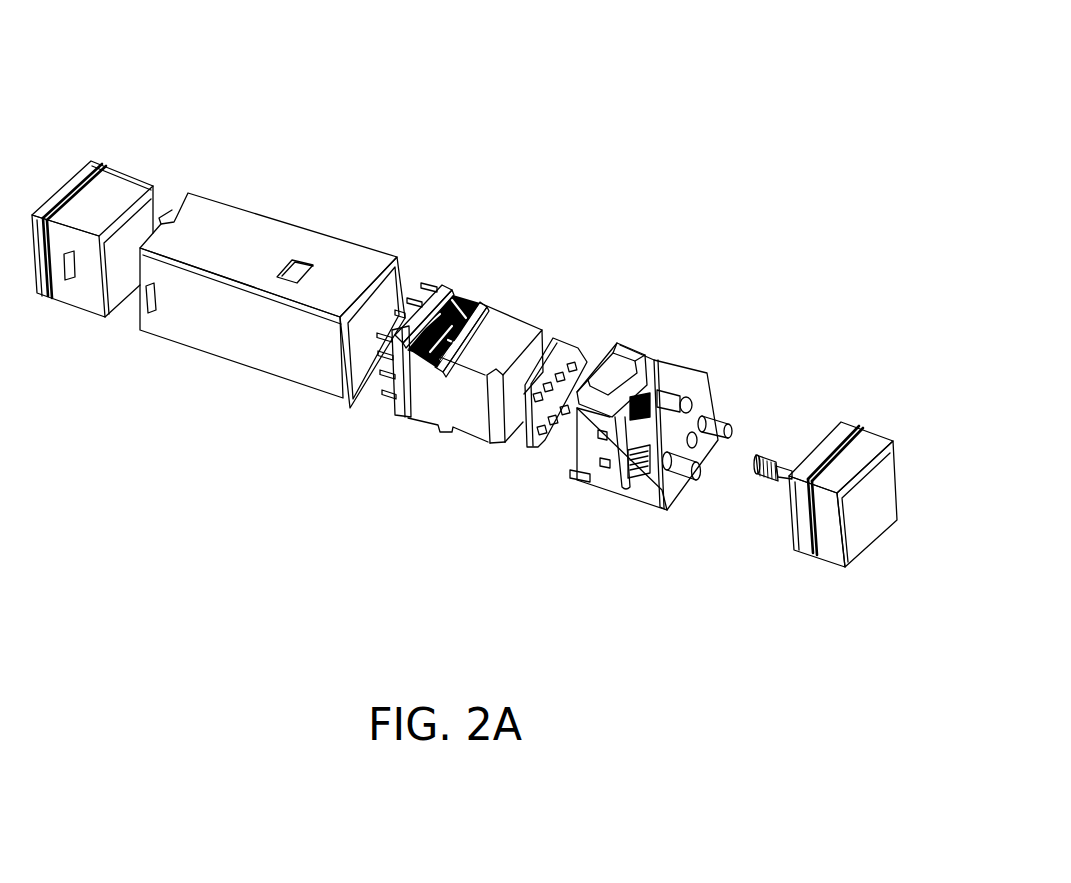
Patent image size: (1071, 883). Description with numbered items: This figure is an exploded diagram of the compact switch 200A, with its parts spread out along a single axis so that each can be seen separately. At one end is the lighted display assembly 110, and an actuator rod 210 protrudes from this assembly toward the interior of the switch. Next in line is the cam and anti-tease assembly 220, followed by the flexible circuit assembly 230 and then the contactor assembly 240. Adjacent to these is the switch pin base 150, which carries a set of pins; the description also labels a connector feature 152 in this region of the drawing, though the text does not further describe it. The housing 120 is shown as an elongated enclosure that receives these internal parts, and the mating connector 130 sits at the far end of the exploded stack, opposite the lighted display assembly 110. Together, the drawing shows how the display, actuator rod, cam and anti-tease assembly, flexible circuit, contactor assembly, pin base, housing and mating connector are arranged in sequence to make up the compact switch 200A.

The compact switch 200A is at (691, 104).
The lighted display assembly 110 is at (884, 411).
The housing 120 is at (287, 230).
The mating connector 130 is at (84, 162).
The switch pin base 150 is at (397, 417).
The connector 152 is at (420, 290).
The actuator rod 210 is at (771, 465).
The cam and anti-tease assembly 220 is at (677, 367).
The flexible circuit assembly 230 is at (576, 315).
The contactor assembly 240 is at (496, 280).